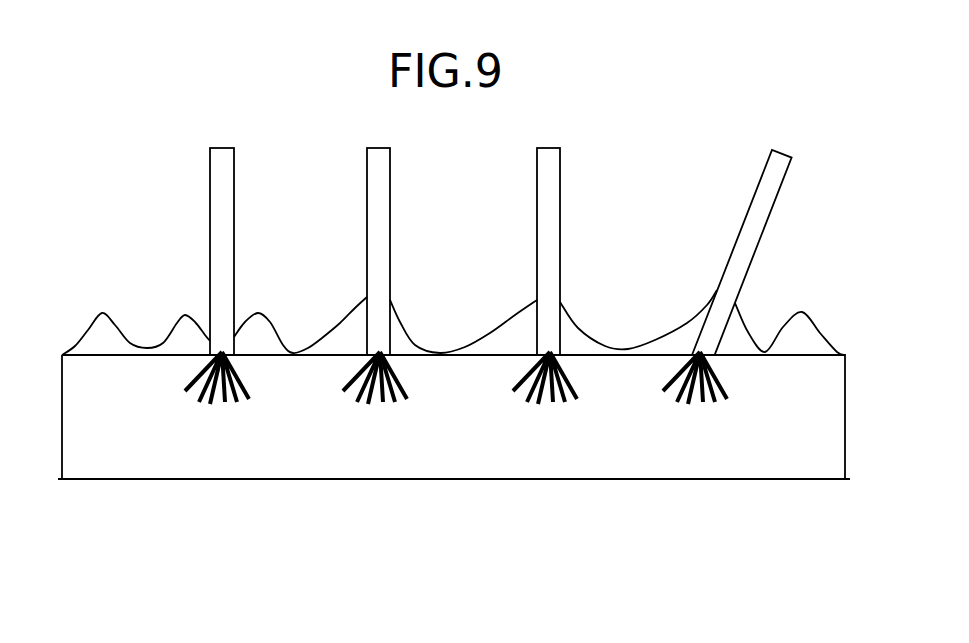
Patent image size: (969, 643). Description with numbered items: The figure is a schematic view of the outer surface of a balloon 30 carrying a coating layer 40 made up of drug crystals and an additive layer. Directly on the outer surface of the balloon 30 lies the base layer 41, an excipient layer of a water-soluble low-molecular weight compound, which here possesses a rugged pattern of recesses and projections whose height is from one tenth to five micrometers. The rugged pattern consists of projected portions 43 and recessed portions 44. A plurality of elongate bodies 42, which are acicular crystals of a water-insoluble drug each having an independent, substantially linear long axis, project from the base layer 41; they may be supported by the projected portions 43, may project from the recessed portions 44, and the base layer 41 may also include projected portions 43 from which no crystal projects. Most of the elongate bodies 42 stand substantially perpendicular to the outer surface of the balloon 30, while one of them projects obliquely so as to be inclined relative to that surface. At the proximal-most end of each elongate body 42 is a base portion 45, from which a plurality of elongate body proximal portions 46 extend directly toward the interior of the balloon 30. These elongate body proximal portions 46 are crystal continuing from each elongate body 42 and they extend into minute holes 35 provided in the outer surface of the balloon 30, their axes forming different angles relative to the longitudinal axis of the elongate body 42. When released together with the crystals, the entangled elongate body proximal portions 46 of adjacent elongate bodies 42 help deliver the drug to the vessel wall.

The balloon 30 is at (462, 453).
The minute holes 35 is at (210, 353).
The coating layer 40 is at (90, 318).
The base layer 41 is at (268, 320).
The elongate bodies 42 is at (222, 203).
The projected portions 43 is at (93, 320).
The recessed portions 44 is at (247, 322).
The base portion 45 is at (245, 400).
The elongate body proximal portions 46 is at (197, 400).